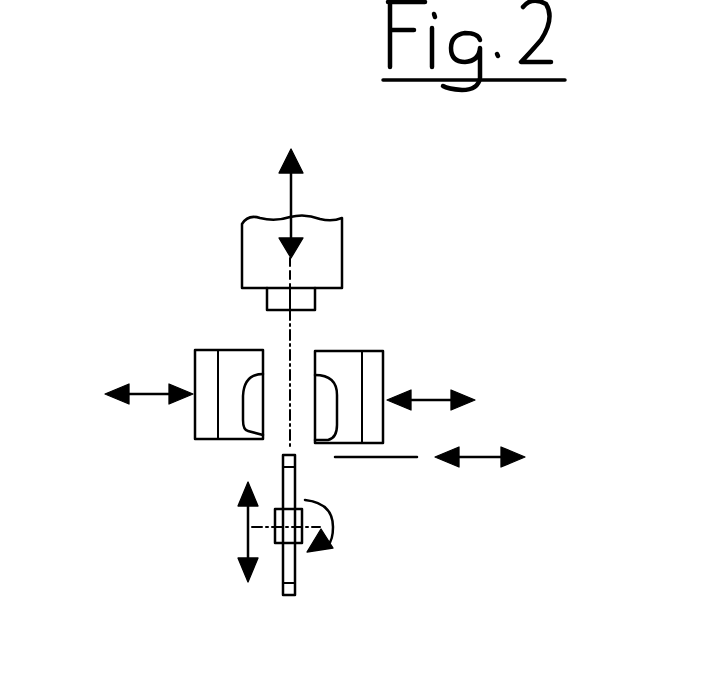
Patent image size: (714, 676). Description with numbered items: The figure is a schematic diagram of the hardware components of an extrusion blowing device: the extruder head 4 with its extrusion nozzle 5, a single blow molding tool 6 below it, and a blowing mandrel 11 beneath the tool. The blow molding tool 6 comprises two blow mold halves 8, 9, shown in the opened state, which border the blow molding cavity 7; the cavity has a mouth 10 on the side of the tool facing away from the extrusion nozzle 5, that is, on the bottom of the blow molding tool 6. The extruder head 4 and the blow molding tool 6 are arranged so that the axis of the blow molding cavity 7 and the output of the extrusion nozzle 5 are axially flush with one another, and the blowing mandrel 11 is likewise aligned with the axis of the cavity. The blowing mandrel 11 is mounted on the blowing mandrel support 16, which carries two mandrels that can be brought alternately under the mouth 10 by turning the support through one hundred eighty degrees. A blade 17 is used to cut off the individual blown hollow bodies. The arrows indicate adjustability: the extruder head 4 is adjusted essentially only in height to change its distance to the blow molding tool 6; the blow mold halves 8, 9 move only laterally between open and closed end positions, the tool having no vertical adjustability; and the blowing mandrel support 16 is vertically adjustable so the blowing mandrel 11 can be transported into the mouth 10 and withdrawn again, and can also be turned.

The extruder head 4 is at (323, 242).
The extrusion nozzle 5 is at (308, 300).
The blow molding tool 6 is at (212, 310).
The blow molding cavity 7 is at (255, 397).
The blow mold half 8 is at (378, 357).
The blow mold half 9 is at (203, 427).
The mouth 10 is at (262, 440).
The blowing mandrel 11 is at (295, 485).
The blowing mandrel support 16 is at (275, 527).
The blade 17 is at (380, 456).